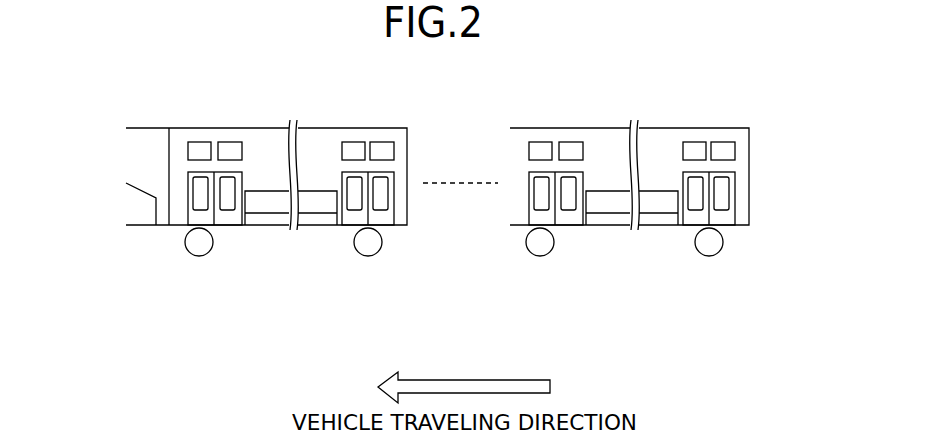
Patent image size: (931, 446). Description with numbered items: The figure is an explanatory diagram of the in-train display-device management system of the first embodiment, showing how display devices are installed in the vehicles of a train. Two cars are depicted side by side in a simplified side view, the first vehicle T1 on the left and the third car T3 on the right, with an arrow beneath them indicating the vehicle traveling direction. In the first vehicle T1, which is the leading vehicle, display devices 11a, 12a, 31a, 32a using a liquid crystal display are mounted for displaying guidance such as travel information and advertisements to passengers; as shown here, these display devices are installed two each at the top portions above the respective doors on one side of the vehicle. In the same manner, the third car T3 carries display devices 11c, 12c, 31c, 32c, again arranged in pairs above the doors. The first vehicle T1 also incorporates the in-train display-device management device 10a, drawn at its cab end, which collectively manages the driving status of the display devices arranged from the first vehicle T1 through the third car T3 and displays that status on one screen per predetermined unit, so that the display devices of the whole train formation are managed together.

The in-train display-device management device 10a is at (132, 210).
The display device 11a is at (197, 142).
The display device 12a is at (232, 142).
The display device 31a is at (350, 142).
The display device 32a is at (387, 142).
The display device 11c is at (538, 142).
The display device 12c is at (573, 142).
The display device 31c is at (691, 142).
The display device 32c is at (728, 142).
The first vehicle T1 is at (250, 214).
The third car T3 is at (637, 214).